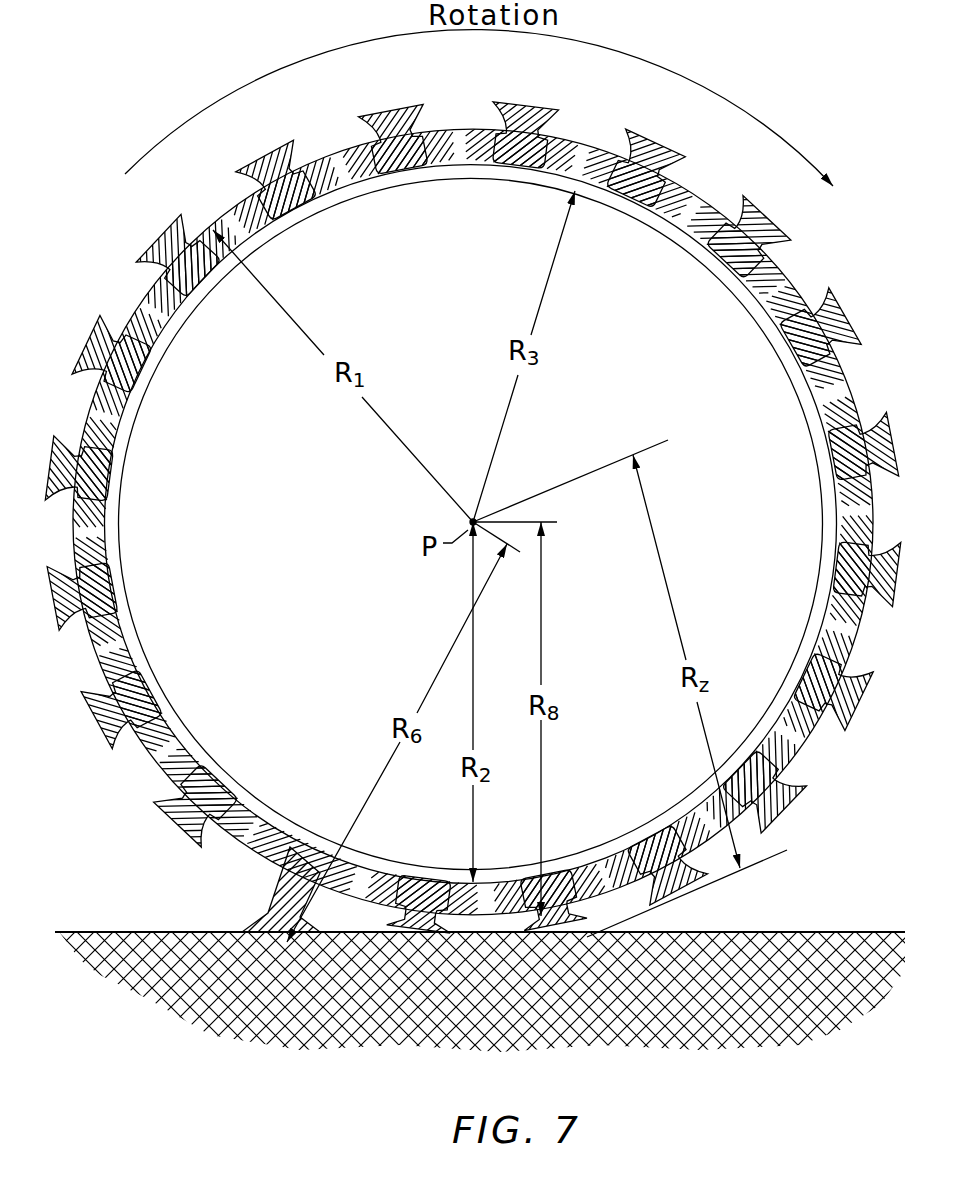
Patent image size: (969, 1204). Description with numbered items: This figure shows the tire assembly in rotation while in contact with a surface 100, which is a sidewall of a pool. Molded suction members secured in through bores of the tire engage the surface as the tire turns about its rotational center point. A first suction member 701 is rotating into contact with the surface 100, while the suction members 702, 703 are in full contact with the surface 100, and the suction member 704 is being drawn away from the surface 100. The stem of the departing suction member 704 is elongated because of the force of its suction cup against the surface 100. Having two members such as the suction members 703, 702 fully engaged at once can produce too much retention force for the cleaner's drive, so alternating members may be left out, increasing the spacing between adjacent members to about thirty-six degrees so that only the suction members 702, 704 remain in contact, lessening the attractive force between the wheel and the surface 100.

The first suction member 701 is at (666, 846).
The suction member 702 is at (555, 874).
The suction member 703 is at (425, 877).
The suction member 704 is at (291, 845).
The surface 100 is at (815, 935).